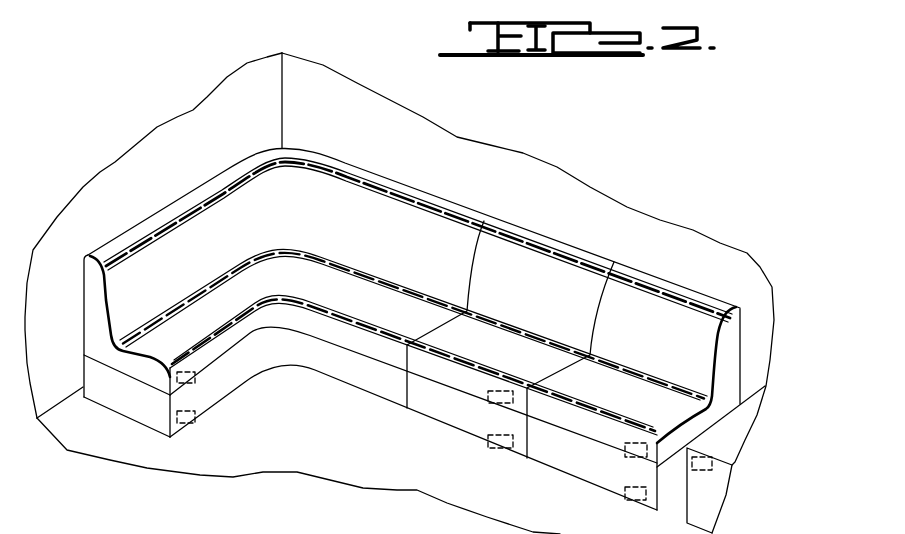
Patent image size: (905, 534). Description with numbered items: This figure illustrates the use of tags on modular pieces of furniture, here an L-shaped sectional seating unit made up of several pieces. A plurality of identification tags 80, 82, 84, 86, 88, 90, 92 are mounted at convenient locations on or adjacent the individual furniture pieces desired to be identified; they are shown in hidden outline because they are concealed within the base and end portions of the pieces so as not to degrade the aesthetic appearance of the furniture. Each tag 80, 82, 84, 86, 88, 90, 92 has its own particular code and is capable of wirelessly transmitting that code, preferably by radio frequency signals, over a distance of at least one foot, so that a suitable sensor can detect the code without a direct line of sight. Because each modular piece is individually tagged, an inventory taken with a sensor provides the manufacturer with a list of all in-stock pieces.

The identification tag 80 is at (195, 378).
The identification tag 82 is at (195, 418).
The identification tag 84 is at (497, 404).
The identification tag 86 is at (497, 449).
The identification tag 88 is at (630, 458).
The identification tag 90 is at (633, 500).
The identification tag 92 is at (706, 470).